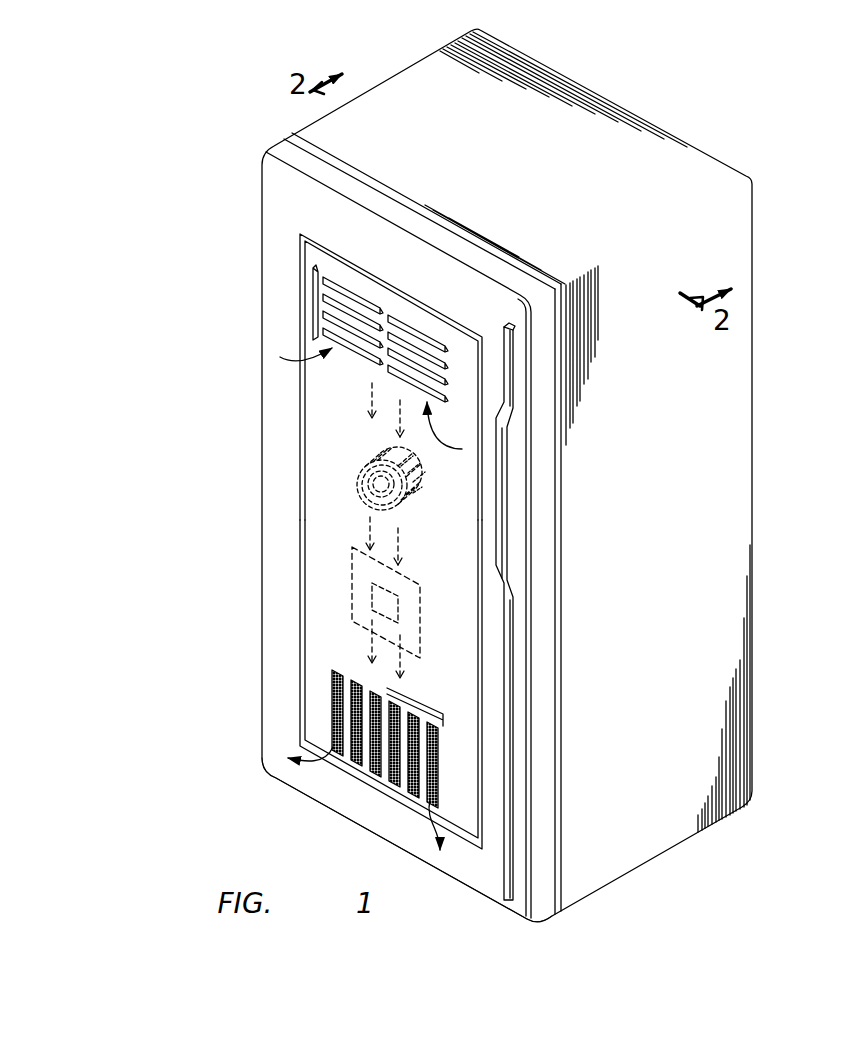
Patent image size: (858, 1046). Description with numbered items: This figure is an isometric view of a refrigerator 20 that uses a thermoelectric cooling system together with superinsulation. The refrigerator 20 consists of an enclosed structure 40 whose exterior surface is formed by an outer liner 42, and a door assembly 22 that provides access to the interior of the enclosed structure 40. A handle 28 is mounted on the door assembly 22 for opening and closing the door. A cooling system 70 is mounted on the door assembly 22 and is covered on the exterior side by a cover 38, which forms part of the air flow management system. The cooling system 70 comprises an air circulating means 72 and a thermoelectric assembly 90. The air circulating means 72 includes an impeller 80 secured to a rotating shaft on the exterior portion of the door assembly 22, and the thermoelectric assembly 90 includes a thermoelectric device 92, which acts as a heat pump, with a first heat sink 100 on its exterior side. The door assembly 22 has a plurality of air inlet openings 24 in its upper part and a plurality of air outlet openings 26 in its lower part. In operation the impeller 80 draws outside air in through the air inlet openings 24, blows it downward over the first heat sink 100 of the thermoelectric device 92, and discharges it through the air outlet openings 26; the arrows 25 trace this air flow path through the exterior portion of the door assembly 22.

The refrigerator 20 is at (690, 104).
The door assembly 22 is at (262, 247).
The air inlet openings 24 is at (313, 304).
The arrows indicating air flow path 25 is at (365, 398).
The air outlet openings 26 is at (414, 703).
The handle 28 is at (501, 497).
The cover 38 is at (471, 831).
The enclosed structure 40 is at (737, 423).
The outer liner 42 is at (746, 683).
The cooling system 70 is at (322, 506).
The air circulating means 72 is at (352, 454).
The impeller 80 is at (425, 500).
The thermoelectric assembly 90 is at (322, 594).
The thermoelectric device 92 is at (408, 613).
The first heat sink 100 is at (407, 578).